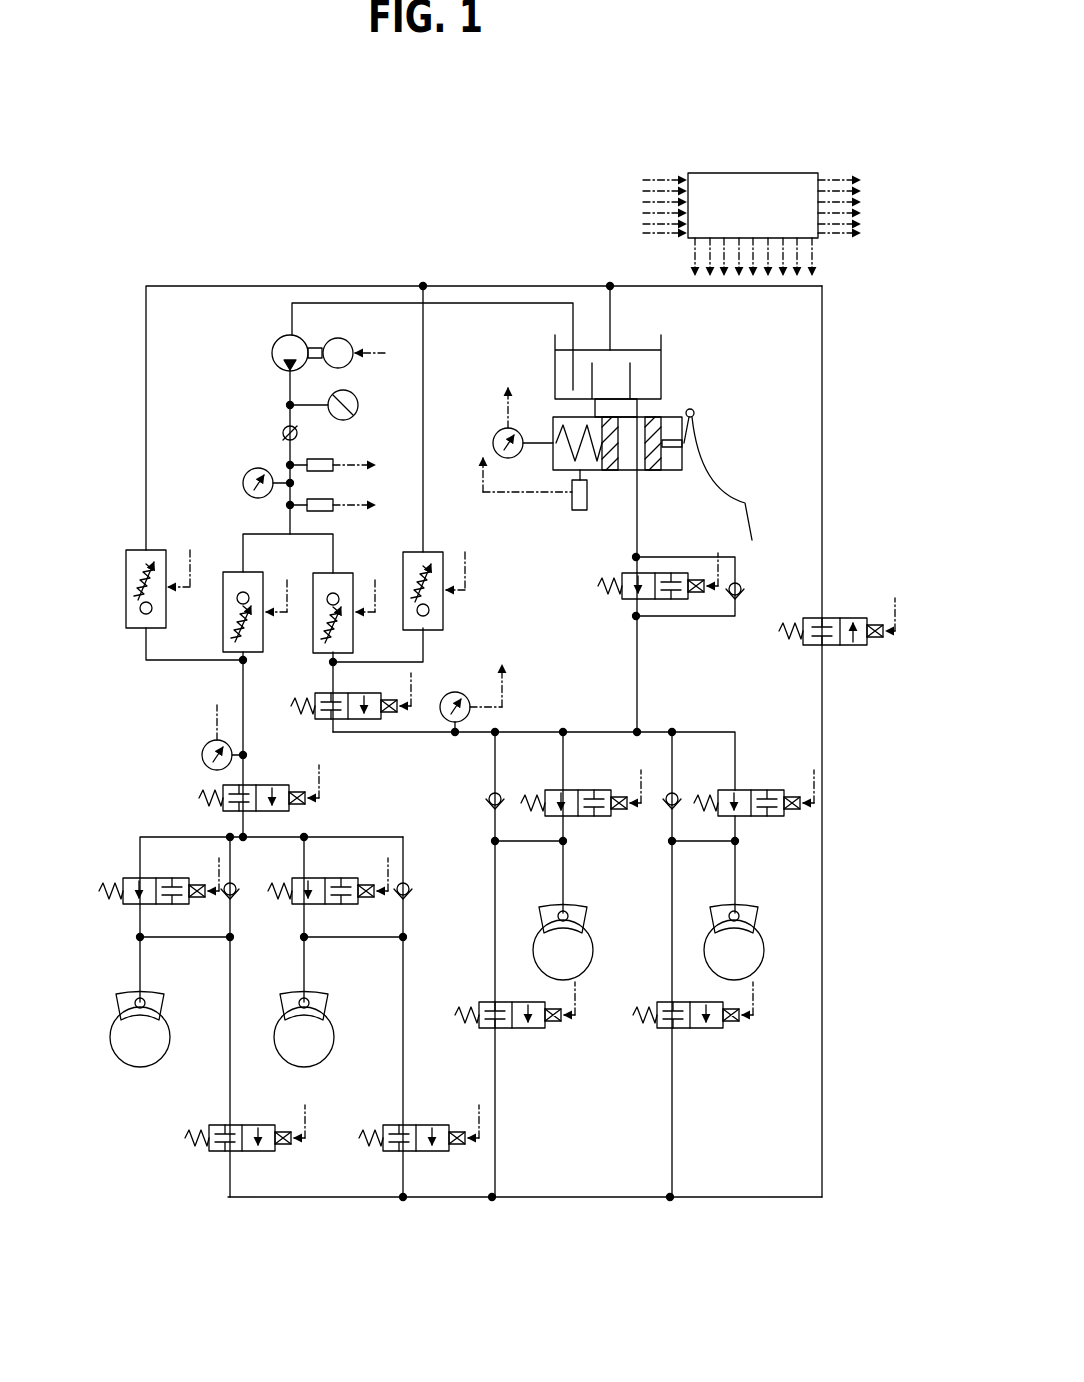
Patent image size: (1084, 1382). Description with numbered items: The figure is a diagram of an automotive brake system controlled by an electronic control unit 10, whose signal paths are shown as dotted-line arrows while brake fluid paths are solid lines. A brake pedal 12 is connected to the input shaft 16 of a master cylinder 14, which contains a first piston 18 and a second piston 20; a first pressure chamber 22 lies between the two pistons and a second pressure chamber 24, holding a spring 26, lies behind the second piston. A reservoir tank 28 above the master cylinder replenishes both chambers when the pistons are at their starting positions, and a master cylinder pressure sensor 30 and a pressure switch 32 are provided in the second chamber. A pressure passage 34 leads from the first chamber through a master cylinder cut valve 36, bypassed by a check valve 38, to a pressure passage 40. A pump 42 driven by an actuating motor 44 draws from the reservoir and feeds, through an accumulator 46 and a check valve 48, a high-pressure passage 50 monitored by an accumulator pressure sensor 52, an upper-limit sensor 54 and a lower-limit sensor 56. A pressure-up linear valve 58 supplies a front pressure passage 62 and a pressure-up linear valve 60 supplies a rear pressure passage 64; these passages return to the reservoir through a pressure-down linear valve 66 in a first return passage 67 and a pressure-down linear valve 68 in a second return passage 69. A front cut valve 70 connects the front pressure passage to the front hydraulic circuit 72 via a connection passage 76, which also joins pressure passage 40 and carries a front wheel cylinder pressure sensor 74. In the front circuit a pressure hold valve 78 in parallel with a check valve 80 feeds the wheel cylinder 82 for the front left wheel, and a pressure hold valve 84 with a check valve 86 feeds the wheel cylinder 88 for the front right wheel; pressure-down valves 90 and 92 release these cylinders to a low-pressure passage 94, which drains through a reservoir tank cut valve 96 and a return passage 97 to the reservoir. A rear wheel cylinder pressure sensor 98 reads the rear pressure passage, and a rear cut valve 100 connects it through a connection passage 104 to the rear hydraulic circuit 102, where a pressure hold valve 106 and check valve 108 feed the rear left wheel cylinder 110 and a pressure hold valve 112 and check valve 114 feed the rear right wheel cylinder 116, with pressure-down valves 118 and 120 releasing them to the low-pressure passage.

The electronic control unit 10 is at (724, 171).
The brake pedal 12 is at (745, 503).
The master cylinder 14 is at (672, 412).
The input shaft 16 is at (695, 426).
The first piston 18 is at (683, 447).
The second piston 20 is at (598, 470).
The first pressure chamber 22 is at (650, 470).
The second pressure chamber 24 is at (553, 459).
The spring 26 is at (558, 430).
The reservoir tank 28 is at (661, 362).
The master cylinder pressure sensor 30 is at (500, 430).
The pressure switch 32 is at (572, 502).
The pressure passage 34 is at (633, 530).
The master cylinder cut valve 36 is at (632, 616).
The check valve 38 is at (746, 588).
The pressure passage 40 is at (640, 660).
The pump 42 is at (272, 343).
The actuating motor 44 is at (352, 341).
The accumulator 46 is at (358, 399).
The check valve 48 is at (285, 428).
The high-pressure passage 50 is at (280, 437).
The accumulator pressure sensor 52 is at (243, 483).
The upper-limit sensor 54 is at (345, 460).
The lower-limit sensor 56 is at (345, 503).
The pressure-up linear valve 58 is at (340, 576).
The pressure-up linear valve 60 is at (260, 576).
The front pressure passage 62 is at (330, 670).
The rear pressure passage 64 is at (240, 682).
The pressure-down linear valve 66 is at (430, 550).
The first return passage 67 is at (424, 338).
The pressure-down linear valve 68 is at (150, 550).
The second return passage 69 is at (146, 335).
The front cut valve 70 is at (332, 720).
The front hydraulic circuit 72 is at (532, 730).
The front wheel cylinder pressure sensor 74 is at (455, 692).
The connection passage 76 is at (445, 736).
The pressure hold valve 78 is at (766, 790).
The check valve 80 is at (681, 795).
The wheel cylinder 82 is at (752, 915).
The pressure hold valve 84 is at (576, 790).
The check valve 86 is at (501, 795).
The wheel cylinder 88 is at (580, 915).
The pressure-down valve 90 is at (700, 1030).
The pressure-down valve 92 is at (525, 1030).
The low-pressure passage 94 is at (565, 1197).
The reservoir tank cut valve 96 is at (835, 615).
The return passage 97 is at (823, 340).
The rear wheel cylinder pressure sensor 98 is at (205, 745).
The rear cut valve 100 is at (288, 790).
The rear hydraulic circuit 102 is at (160, 834).
The connection passage 104 is at (350, 837).
The pressure hold valve 106 is at (315, 878).
The check valve 108 is at (410, 885).
The wheel cylinder 110 is at (330, 1004).
The pressure hold valve 112 is at (148, 878).
The check valve 114 is at (235, 882).
The wheel cylinder 116 is at (156, 1003).
The pressure-down valve 118 is at (421, 1125).
The pressure-down valve 120 is at (254, 1125).